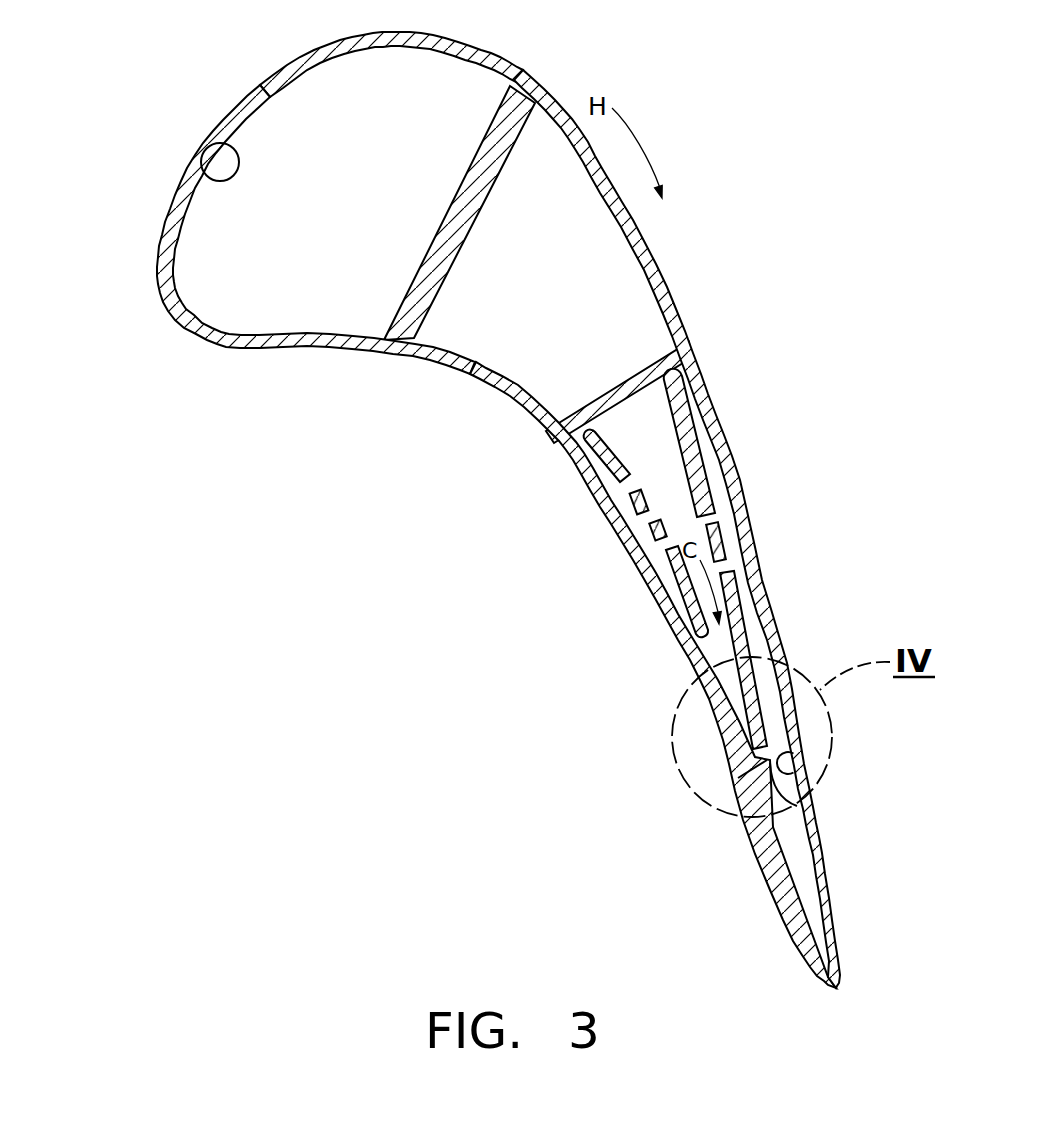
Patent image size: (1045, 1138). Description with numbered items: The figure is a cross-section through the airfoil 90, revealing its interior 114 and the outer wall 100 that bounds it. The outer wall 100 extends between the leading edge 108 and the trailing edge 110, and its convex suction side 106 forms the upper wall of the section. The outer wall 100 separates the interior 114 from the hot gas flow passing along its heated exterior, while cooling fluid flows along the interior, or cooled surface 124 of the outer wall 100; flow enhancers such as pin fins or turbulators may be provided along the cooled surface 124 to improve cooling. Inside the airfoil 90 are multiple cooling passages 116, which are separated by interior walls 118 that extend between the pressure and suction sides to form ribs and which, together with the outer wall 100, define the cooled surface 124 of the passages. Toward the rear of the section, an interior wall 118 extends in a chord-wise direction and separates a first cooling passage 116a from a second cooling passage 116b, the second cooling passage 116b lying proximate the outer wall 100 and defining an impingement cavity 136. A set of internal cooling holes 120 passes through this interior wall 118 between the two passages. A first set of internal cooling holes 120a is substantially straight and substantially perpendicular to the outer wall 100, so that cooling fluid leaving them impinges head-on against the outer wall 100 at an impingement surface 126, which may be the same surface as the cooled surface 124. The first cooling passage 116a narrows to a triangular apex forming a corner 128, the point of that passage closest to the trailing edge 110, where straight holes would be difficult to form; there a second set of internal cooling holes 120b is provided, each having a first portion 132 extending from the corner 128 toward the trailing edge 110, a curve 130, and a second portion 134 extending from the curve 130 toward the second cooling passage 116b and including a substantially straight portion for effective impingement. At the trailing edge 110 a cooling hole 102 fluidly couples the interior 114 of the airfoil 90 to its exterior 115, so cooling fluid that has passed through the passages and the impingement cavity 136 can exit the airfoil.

The airfoil 90 is at (490, 522).
The outer wall 100 is at (508, 396).
The cooling hole 102 is at (834, 986).
The suction side wall 106 is at (645, 224).
The leading edge 108 is at (165, 306).
The trailing edge 110 is at (838, 980).
The interior 114 is at (412, 72).
The exterior 115 is at (405, 567).
The cooling passages 116 is at (370, 245).
The first cooling passage 116a is at (650, 432).
The second cooling passage 116b is at (743, 600).
The interior walls 118 is at (489, 196).
The set of internal cooling holes 120 is at (668, 496).
The first set of internal cooling holes 120a is at (725, 566).
The second set of internal cooling holes 120b is at (765, 752).
The cooled surface 124 is at (201, 170).
The impingement surface 126 is at (799, 770).
The corner 128 is at (733, 713).
The curve 130 is at (763, 773).
The first portion 132 is at (735, 748).
The second portion 134 is at (787, 813).
The impingement cavity 136 is at (757, 645).